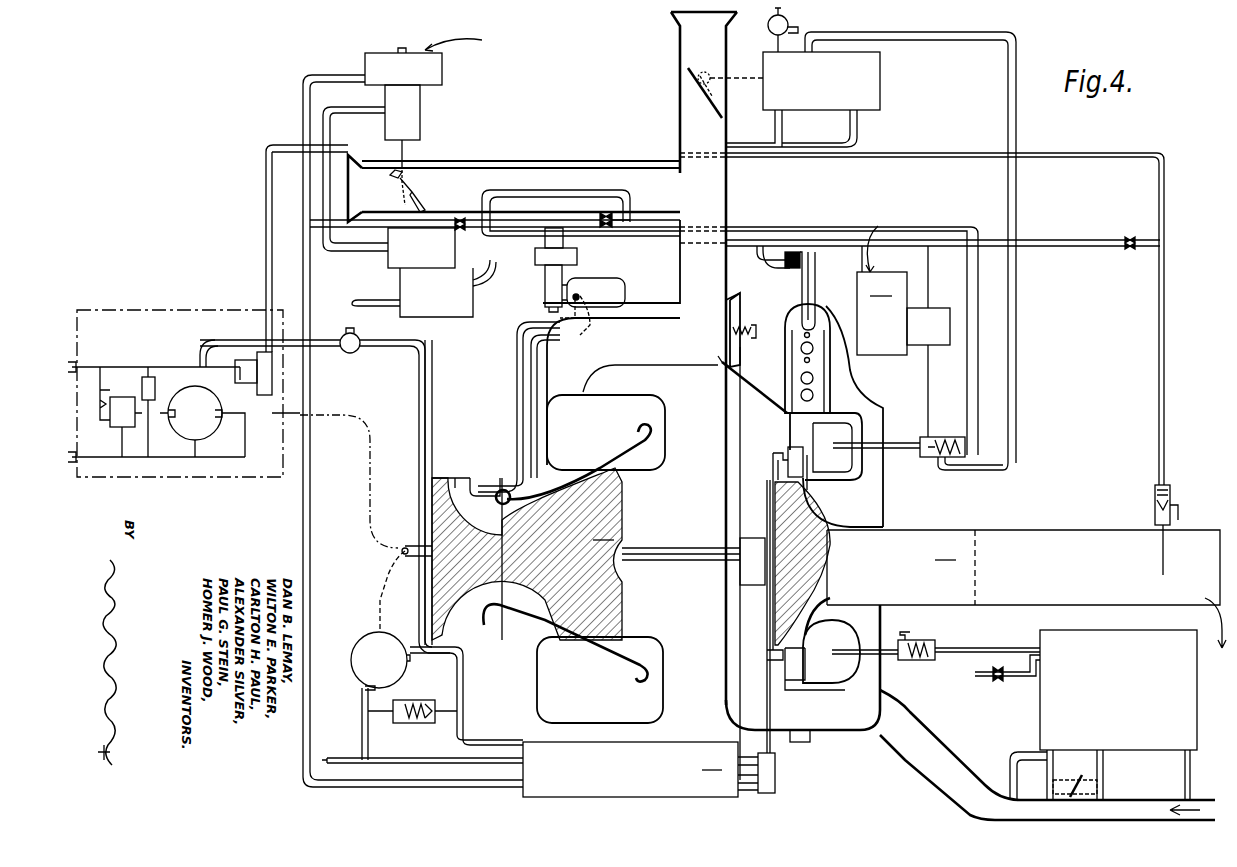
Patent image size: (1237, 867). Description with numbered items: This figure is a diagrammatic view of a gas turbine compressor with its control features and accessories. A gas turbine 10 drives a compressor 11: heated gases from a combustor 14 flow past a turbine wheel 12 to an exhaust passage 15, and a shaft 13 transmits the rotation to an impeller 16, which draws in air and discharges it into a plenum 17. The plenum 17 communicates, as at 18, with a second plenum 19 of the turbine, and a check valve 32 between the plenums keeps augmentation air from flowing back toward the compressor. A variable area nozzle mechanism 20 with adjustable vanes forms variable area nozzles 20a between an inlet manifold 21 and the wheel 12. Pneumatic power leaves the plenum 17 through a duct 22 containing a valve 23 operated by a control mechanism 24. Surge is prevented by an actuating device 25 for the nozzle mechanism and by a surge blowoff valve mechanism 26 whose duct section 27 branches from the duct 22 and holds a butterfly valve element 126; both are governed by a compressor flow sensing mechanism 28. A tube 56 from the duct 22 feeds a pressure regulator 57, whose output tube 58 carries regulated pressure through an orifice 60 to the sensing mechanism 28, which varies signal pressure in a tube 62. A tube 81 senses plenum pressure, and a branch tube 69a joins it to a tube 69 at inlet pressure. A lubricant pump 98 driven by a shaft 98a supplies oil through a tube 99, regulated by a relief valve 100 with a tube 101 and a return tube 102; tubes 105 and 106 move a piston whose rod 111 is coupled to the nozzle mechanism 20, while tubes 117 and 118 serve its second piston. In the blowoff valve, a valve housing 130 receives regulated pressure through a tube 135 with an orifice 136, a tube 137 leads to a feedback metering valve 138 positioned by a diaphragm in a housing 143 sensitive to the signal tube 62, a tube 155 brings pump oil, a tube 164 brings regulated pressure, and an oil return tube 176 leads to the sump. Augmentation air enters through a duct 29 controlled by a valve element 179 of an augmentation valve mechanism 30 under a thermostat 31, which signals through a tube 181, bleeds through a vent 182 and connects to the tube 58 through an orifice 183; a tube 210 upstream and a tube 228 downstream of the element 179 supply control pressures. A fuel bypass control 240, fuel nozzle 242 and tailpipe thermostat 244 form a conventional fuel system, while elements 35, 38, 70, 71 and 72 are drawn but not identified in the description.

The gas turbine 10 is at (906, 516).
The compressor 11 is at (518, 654).
The turbine wheel 12 is at (820, 610).
The shaft 13 is at (703, 565).
The combustor 14 is at (846, 390).
The exhaust passage 15 is at (1026, 589).
The impeller 16 is at (527, 554).
The plenum 17 is at (626, 395).
The plenum communication 18 is at (724, 300).
The second plenum 19 is at (846, 722).
The variable area nozzle mechanism 20 is at (782, 440).
The variable area nozzles 20a is at (803, 462).
The inlet manifold 21 is at (818, 680).
The duct 22 is at (711, 275).
The valve 23 is at (698, 90).
The valve control mechanism 24 is at (880, 96).
The actuating device 25 is at (666, 763).
The surge blowoff valve mechanism 26 is at (389, 41).
The duct section 27 is at (590, 161).
The compressor flow sensing mechanism 28 is at (591, 266).
The duct 29 is at (934, 692).
The augmentation valve mechanism 30 is at (1040, 695).
The thermostatic temperature sensing device 31 is at (875, 652).
The check valve 32 is at (722, 364).
The compressor housing 35 is at (455, 478).
The diffuser vane 38 is at (655, 430).
The tube 56 is at (763, 256).
The pressure regulator 57 is at (919, 316).
The output pressure conducting tube 58 is at (978, 292).
The orifice 60 is at (620, 207).
The signal pressure output tube 62 is at (303, 97).
The tube 69 is at (517, 418).
The branch tube 69a is at (592, 308).
The pivot 70 is at (497, 504).
The sensing tube 71 is at (531, 398).
The tube bracket 72 is at (491, 478).
The tube 81 is at (625, 288).
The lubricant pump 98 is at (362, 640).
The shaft 98a is at (416, 546).
The tube 99 is at (463, 684).
The pressure relief valve 100 is at (410, 700).
The tube 101 is at (353, 758).
The fluid return tube 102 is at (426, 758).
The fluid conducting tube 105 is at (745, 753).
The fluid conducting tube 106 is at (738, 783).
The rod 111 is at (767, 640).
The tube 117 is at (800, 745).
The tube 118 is at (758, 783).
The butterfly valve element 126 is at (440, 180).
The valve housing 130 is at (405, 256).
The tube 135 is at (537, 196).
The orifice 136 is at (463, 240).
The tube 137 is at (335, 113).
The feedback metering valve 138 is at (433, 120).
The housing 143 is at (430, 62).
The tube 155 is at (423, 380).
The tube 164 is at (480, 279).
The oil return tube 176 is at (394, 312).
The valve element 179 is at (1065, 792).
The tube 181 is at (984, 648).
The vent 182 is at (915, 637).
The orifice 183 is at (1005, 660).
The tube 210 is at (1190, 790).
The tube 228 is at (1012, 752).
The fuel bypass control 240 is at (211, 308).
The fuel nozzle 242 is at (754, 330).
The tailpipe thermostat 244 is at (1165, 540).